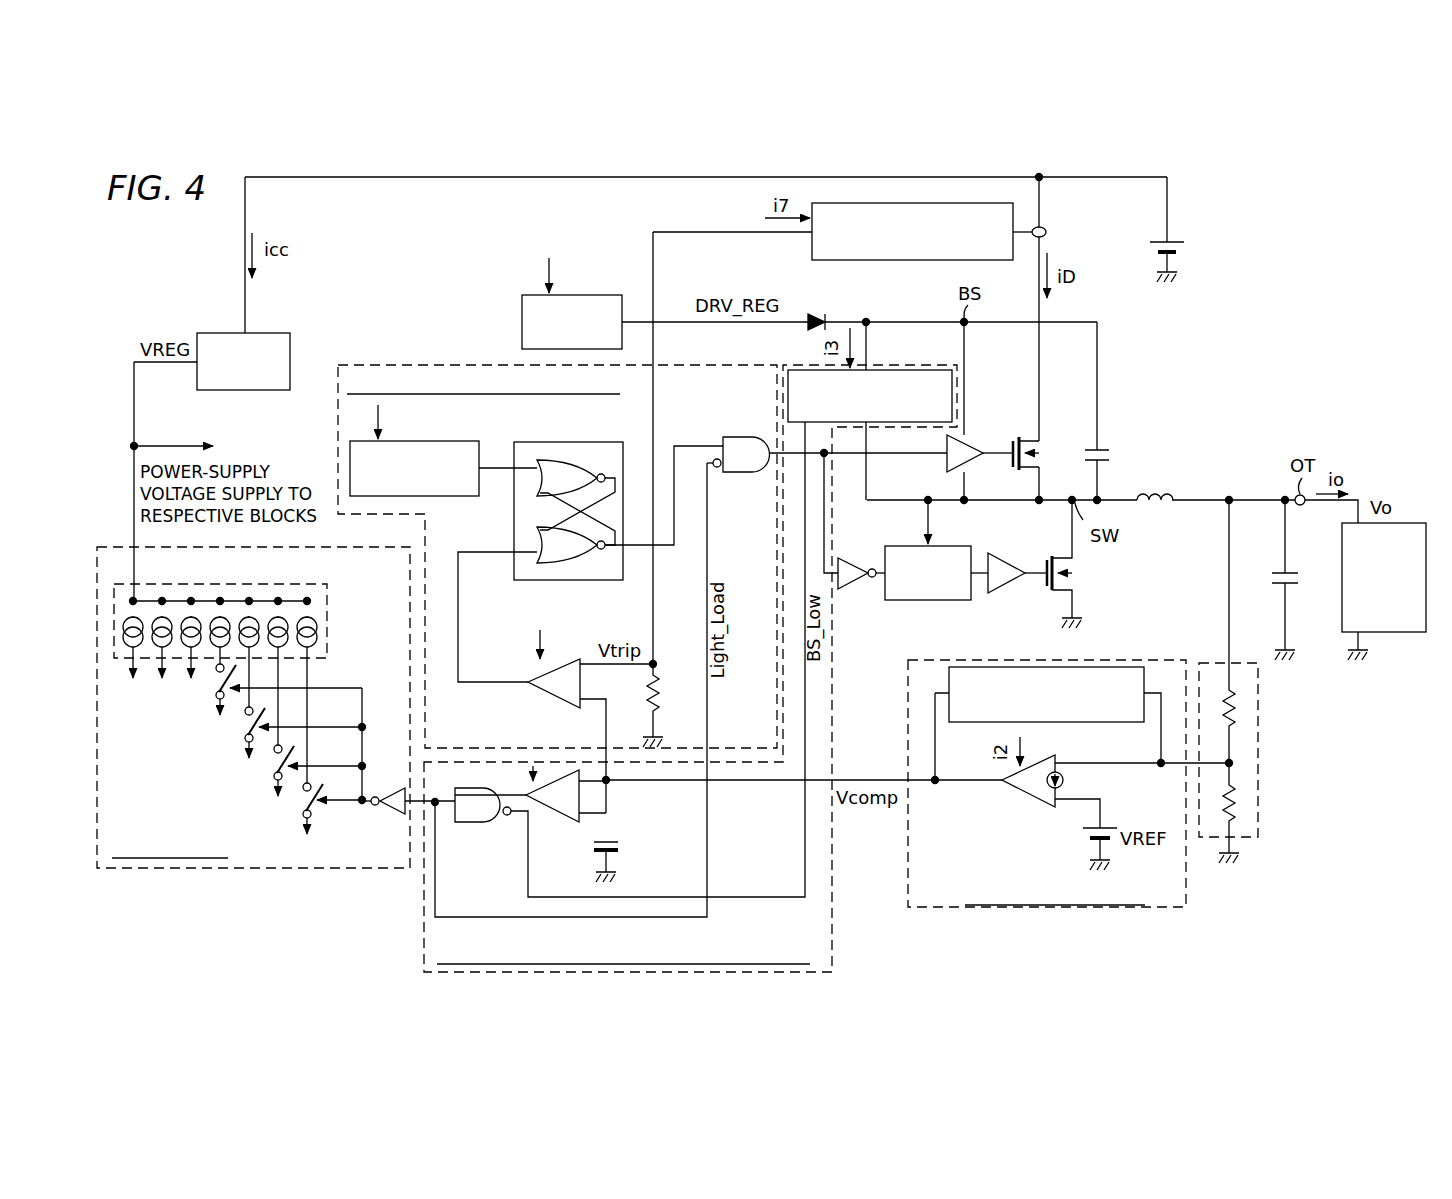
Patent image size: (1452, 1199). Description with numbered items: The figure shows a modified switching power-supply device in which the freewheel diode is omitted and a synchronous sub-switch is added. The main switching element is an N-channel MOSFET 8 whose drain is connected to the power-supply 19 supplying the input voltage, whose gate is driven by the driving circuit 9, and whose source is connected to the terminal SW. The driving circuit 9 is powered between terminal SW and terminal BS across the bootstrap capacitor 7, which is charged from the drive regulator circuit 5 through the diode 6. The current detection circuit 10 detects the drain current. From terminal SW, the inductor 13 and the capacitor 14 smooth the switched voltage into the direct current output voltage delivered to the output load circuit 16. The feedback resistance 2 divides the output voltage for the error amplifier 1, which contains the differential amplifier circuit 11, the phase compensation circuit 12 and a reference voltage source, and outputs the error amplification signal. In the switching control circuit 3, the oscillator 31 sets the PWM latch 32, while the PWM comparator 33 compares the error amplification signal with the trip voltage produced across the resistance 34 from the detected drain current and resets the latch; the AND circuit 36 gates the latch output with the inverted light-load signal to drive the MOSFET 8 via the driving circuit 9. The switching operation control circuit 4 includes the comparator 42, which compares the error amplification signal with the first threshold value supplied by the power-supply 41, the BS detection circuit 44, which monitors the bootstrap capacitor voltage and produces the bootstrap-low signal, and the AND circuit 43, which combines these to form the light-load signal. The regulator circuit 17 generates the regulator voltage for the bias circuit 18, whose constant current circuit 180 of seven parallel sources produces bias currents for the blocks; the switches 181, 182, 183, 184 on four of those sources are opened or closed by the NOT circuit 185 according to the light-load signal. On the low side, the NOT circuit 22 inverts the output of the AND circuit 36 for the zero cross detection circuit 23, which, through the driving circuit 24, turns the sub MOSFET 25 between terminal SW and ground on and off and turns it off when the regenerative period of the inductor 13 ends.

The error amplifier 1 is at (1175, 660).
The feedback resistance 2 is at (1245, 663).
The switching control circuit 3 is at (358, 365).
The switching operation control circuit 4 is at (424, 944).
The drive regulator circuit 5 is at (595, 294).
The diode 6 is at (816, 314).
The bootstrap capacitor 7 is at (1092, 448).
The N-channel type MOSFET 8 is at (1030, 438).
The driving circuit 9 is at (969, 442).
The current detection circuit 10 is at (917, 260).
The differential amplifier circuit 11 is at (1030, 807).
The phase compensation circuit 12 is at (1113, 722).
The inductor 13 is at (1162, 492).
The capacitor 14 is at (1294, 571).
The output load circuit 16 is at (1342, 610).
The regulator circuit 17 is at (222, 333).
The bias circuit 18 is at (150, 868).
The power-supply 19 is at (1180, 240).
The NOT circuit 22 is at (854, 589).
The zero cross detection circuit 23 is at (940, 600).
The driving circuit 24 is at (999, 593).
The N-channel type MOSFET 25 is at (1056, 594).
The oscillator 31 is at (422, 441).
The PWM latch 32 is at (610, 580).
The PWM comparator 33 is at (559, 659).
The resistance 34 is at (648, 691).
The AND circuit 36 is at (749, 472).
The power-supply 41 is at (618, 846).
The comparator 42 is at (555, 822).
The AND circuit 43 is at (480, 822).
The BS detection circuit 44 is at (945, 370).
The constant current circuit 180 is at (298, 581).
The switch 181 is at (236, 670).
The switch 182 is at (263, 712).
The switch 183 is at (291, 753).
The switch 184 is at (318, 806).
The NOT circuit 185 is at (392, 814).